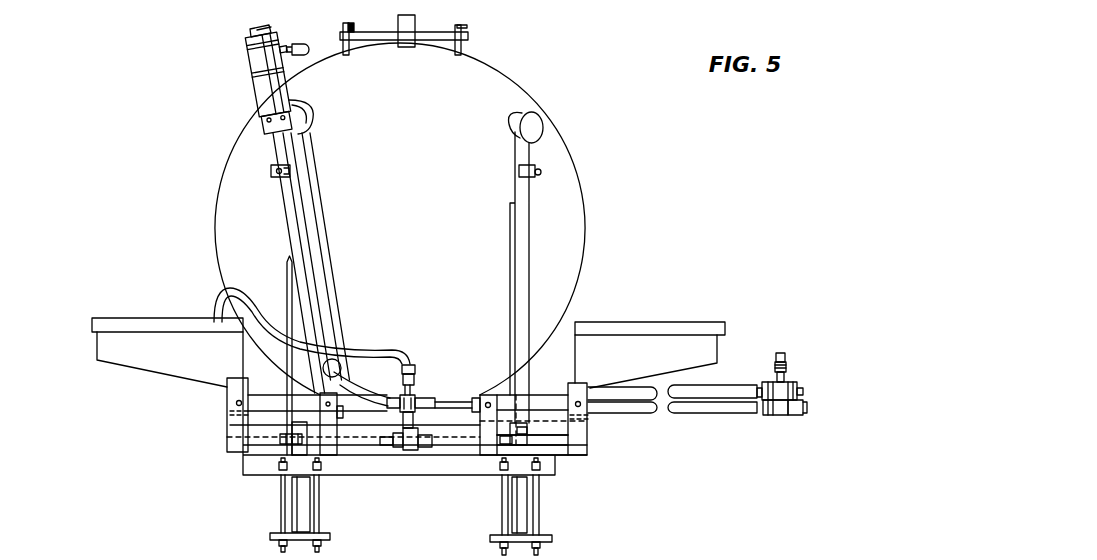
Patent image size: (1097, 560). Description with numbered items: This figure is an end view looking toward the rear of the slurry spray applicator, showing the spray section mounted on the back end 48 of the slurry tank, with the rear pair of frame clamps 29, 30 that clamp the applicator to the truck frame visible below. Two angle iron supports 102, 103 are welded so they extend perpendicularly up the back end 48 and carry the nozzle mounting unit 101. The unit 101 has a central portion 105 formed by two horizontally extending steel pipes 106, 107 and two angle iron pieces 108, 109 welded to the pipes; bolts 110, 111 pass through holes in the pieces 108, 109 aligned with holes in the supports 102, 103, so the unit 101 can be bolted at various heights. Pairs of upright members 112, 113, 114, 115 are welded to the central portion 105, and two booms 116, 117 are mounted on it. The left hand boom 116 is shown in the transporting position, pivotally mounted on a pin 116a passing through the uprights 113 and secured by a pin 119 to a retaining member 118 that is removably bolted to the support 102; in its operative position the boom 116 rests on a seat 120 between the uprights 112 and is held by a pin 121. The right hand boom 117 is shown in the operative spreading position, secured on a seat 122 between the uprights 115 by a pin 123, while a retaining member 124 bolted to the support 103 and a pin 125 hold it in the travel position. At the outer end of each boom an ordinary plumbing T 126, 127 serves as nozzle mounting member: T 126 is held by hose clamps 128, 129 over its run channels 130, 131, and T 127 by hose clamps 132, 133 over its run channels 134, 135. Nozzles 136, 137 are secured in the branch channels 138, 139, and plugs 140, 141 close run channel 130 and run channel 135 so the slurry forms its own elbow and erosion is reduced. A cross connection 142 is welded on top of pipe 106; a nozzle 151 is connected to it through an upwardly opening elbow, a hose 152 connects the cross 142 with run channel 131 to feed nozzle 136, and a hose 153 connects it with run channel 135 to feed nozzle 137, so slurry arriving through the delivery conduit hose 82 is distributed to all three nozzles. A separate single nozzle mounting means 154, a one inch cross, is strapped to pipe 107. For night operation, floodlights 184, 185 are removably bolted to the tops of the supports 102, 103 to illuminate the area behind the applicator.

The rear frame clamp 29 is at (281, 511).
The rear frame clamp 30 is at (542, 513).
The back end of the slurry tank 48 is at (418, 219).
The delivery conduit hose 82 is at (222, 296).
The nozzle mounting unit 101 is at (407, 488).
The angle iron support 102 is at (287, 284).
The angle iron support 103 is at (530, 268).
The central portion 105 is at (611, 474).
The steel pipe 106 is at (557, 447).
The steel pipe 107 is at (543, 436).
The angle iron piece 108 is at (292, 422).
The angle iron piece 109 is at (514, 438).
The bolt 110 is at (282, 440).
The bolt 111 is at (526, 430).
The upright members 112 is at (227, 443).
The upright members 113 is at (330, 449).
The upright members 114 is at (486, 455).
The upright members 115 is at (588, 448).
The left hand boom 116 is at (258, 110).
The pin 116a is at (343, 410).
The right hand boom 117 is at (722, 420).
The retaining member 118 is at (277, 178).
The pin 119 is at (272, 169).
The seat 120 is at (228, 413).
The pin 121 is at (236, 403).
The seat 122 is at (588, 416).
The pin 123 is at (582, 407).
The retaining member 124 is at (538, 168).
The pin 125 is at (540, 176).
The plumbing T 126 is at (276, 25).
The plumbing T 127 is at (806, 408).
The hose clamp 128 is at (249, 48).
The hose clamp 129 is at (262, 66).
The run channel 130 is at (274, 38).
The run channel 131 is at (284, 72).
The hose clamp 132 is at (771, 416).
The hose clamp 133 is at (793, 416).
The run channel 134 is at (766, 383).
The run channel 135 is at (793, 382).
The nozzle 136 is at (310, 45).
The nozzle 137 is at (782, 352).
The branch channel 138 is at (288, 51).
The branch channel 139 is at (776, 378).
The plug 140 is at (258, 32).
The plug 141 is at (803, 391).
The cross connection 142 is at (418, 395).
The nozzle 151 is at (413, 366).
The hose 152 is at (322, 257).
The hose 153 is at (462, 400).
The single nozzle mounting means 154 is at (411, 449).
The floodlight 184 is at (316, 108).
The floodlight 185 is at (511, 117).